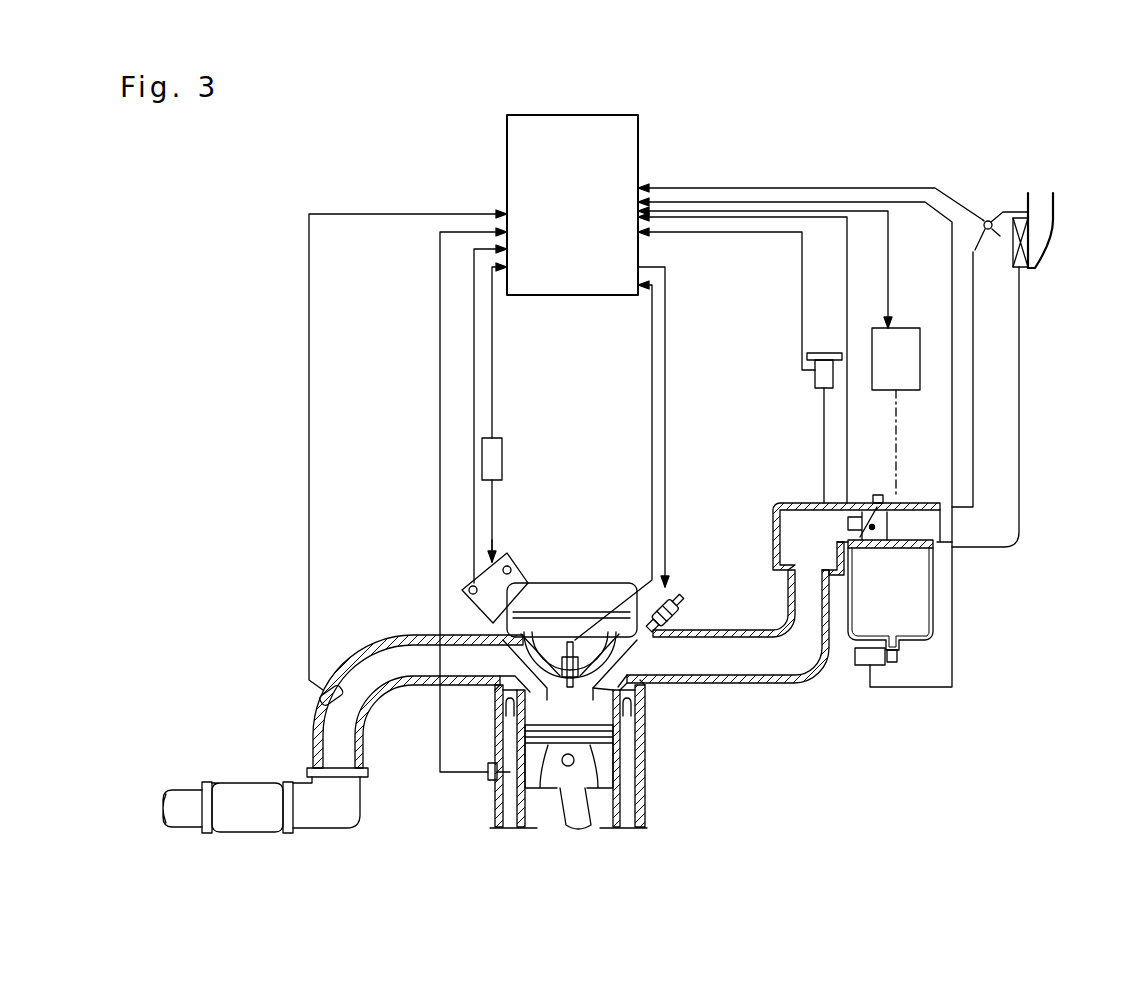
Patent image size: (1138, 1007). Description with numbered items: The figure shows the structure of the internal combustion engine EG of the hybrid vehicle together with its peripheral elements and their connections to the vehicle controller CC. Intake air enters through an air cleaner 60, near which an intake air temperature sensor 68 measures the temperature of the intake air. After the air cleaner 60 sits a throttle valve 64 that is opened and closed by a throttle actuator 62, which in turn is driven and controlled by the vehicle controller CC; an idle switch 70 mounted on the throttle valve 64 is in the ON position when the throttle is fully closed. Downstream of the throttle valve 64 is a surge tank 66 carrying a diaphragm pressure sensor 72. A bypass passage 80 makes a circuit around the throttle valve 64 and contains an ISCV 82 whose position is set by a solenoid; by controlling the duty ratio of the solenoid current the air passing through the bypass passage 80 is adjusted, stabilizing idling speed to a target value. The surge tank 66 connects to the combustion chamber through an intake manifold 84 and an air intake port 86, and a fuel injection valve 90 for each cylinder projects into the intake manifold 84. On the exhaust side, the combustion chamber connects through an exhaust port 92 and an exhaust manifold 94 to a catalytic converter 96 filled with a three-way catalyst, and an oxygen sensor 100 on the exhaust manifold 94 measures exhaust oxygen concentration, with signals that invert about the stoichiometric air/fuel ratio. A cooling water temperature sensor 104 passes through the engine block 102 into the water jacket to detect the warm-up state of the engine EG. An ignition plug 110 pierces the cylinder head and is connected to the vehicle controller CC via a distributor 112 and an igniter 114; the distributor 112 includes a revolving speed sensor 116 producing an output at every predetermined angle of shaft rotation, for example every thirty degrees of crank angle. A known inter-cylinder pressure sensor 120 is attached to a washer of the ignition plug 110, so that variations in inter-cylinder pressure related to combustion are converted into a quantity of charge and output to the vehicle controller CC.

The vehicle controller CC is at (600, 115).
The internal combustion engine EG is at (564, 764).
The air cleaner 60 is at (1036, 250).
The throttle actuator 62 is at (905, 328).
The throttle valve 64 is at (892, 512).
The surge tank 66 is at (773, 520).
The intake air temperature sensor 68 is at (986, 220).
The idle switch 70 is at (872, 495).
The diaphragm pressure sensor 72 is at (818, 388).
The bypass passage 80 is at (937, 605).
The idle speed control valve (ISCV) 82 is at (857, 665).
The intake manifold 84 is at (700, 683).
The air intake port 86 is at (645, 712).
The fuel injection valve 90 is at (683, 600).
The exhaust port 92 is at (540, 648).
The exhaust manifold 94 is at (462, 686).
The catalytic converter 96 is at (252, 833).
The oxygen sensor 100 is at (332, 686).
The engine block 102 is at (493, 800).
The cooling water temperature sensor 104 is at (486, 775).
The ignition plug 110 is at (566, 792).
The distributor 112 is at (508, 553).
The igniter 114 is at (503, 465).
The revolving speed sensor 116 is at (462, 588).
The inter-cylinder pressure sensor 120 is at (584, 770).